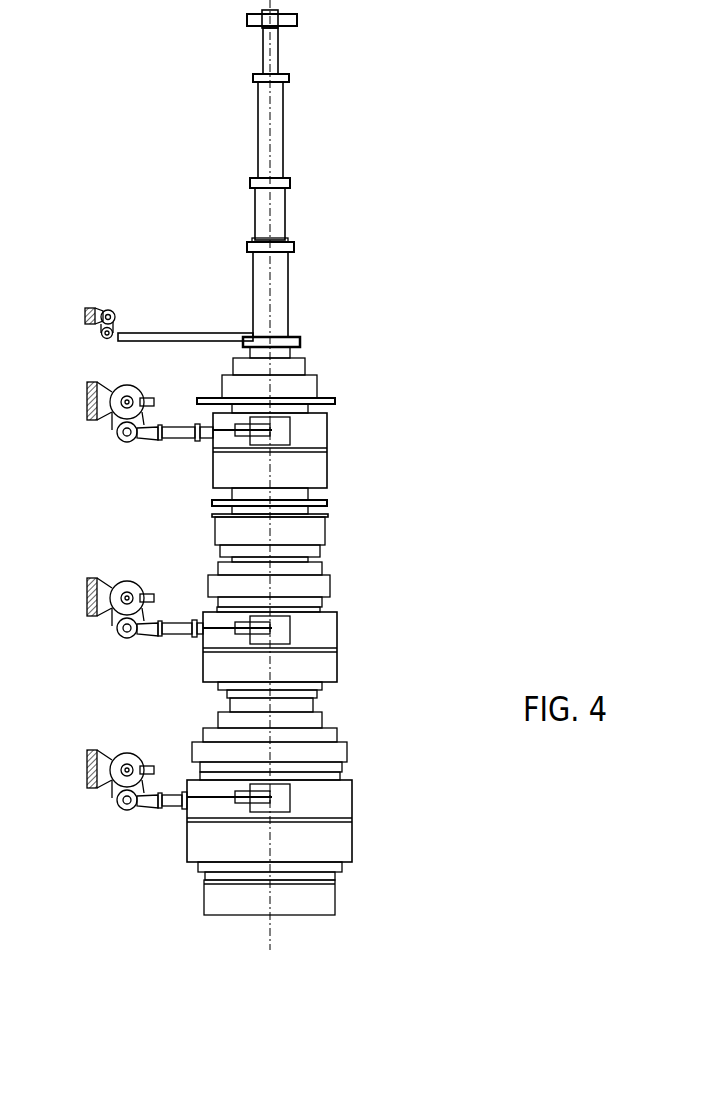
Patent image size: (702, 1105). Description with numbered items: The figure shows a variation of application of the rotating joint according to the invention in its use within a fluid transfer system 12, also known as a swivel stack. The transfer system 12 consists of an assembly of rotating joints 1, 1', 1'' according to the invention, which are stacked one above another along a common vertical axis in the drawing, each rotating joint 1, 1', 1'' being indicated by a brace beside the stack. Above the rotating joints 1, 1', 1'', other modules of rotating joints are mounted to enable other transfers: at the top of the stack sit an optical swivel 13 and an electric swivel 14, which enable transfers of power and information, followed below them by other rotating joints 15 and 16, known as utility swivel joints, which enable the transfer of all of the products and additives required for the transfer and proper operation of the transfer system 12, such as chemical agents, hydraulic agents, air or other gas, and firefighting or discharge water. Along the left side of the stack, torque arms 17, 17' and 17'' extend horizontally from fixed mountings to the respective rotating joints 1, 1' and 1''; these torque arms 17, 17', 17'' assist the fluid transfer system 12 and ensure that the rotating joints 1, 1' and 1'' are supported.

The fluid transfer system 12 is at (413, 92).
The optical swivel 13 is at (262, 50).
The electric swivel 14 is at (258, 127).
The utility swivel joint 15 is at (255, 215).
The utility swivel joint 16 is at (252, 291).
The rotating joint 1 is at (300, 459).
The rotating joint 1' is at (301, 670).
The rotating joint 1'' is at (308, 825).
The torque arm 17 is at (140, 428).
The torque arm 17' is at (145, 653).
The torque arm 17'' is at (117, 742).